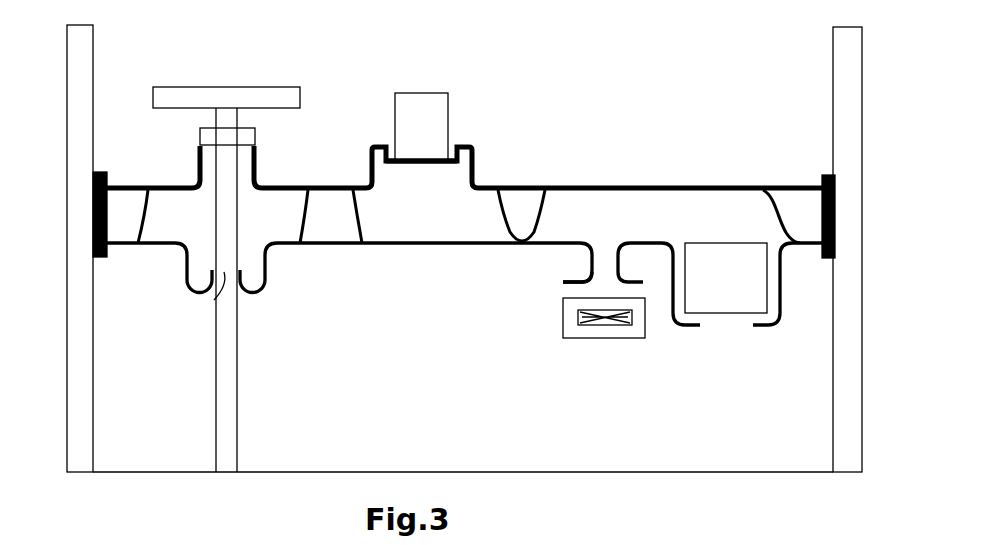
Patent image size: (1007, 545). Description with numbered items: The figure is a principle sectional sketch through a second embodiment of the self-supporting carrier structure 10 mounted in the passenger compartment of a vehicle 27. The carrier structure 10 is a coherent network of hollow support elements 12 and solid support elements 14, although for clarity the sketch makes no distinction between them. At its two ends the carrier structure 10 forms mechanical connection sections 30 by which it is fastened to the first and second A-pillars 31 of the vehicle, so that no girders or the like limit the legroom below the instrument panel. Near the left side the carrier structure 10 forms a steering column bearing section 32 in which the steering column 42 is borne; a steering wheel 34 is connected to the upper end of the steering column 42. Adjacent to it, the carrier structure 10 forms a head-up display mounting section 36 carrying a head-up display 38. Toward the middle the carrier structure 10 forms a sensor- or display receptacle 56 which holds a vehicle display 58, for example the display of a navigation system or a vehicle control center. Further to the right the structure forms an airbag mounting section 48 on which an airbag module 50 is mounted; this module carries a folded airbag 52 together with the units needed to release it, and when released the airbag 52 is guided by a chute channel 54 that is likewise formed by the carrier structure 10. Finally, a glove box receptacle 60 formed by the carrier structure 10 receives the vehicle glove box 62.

The carrier structure 10 is at (672, 138).
The hollow support elements 12 is at (470, 246).
The solid support elements 14 is at (469, 216).
The vehicle 27 is at (645, 447).
The mechanical connection section 30 is at (103, 260).
The A-pillar 31 is at (96, 44).
The steering column bearing section 32 is at (216, 296).
The steering wheel 34 is at (247, 87).
The head-up display mounting section 36 is at (258, 157).
The head-up display 38 is at (200, 137).
The steering column 42 is at (237, 431).
The airbag mounting section 48 is at (574, 282).
The airbag module 50 is at (578, 340).
The airbag 52 is at (606, 326).
The chute channel 54 is at (604, 262).
The sensor- or display receptacle 56 is at (426, 165).
The vehicle display 58 is at (449, 108).
The glove box receptacle 60 is at (760, 328).
The vehicle glove box 62 is at (744, 294).